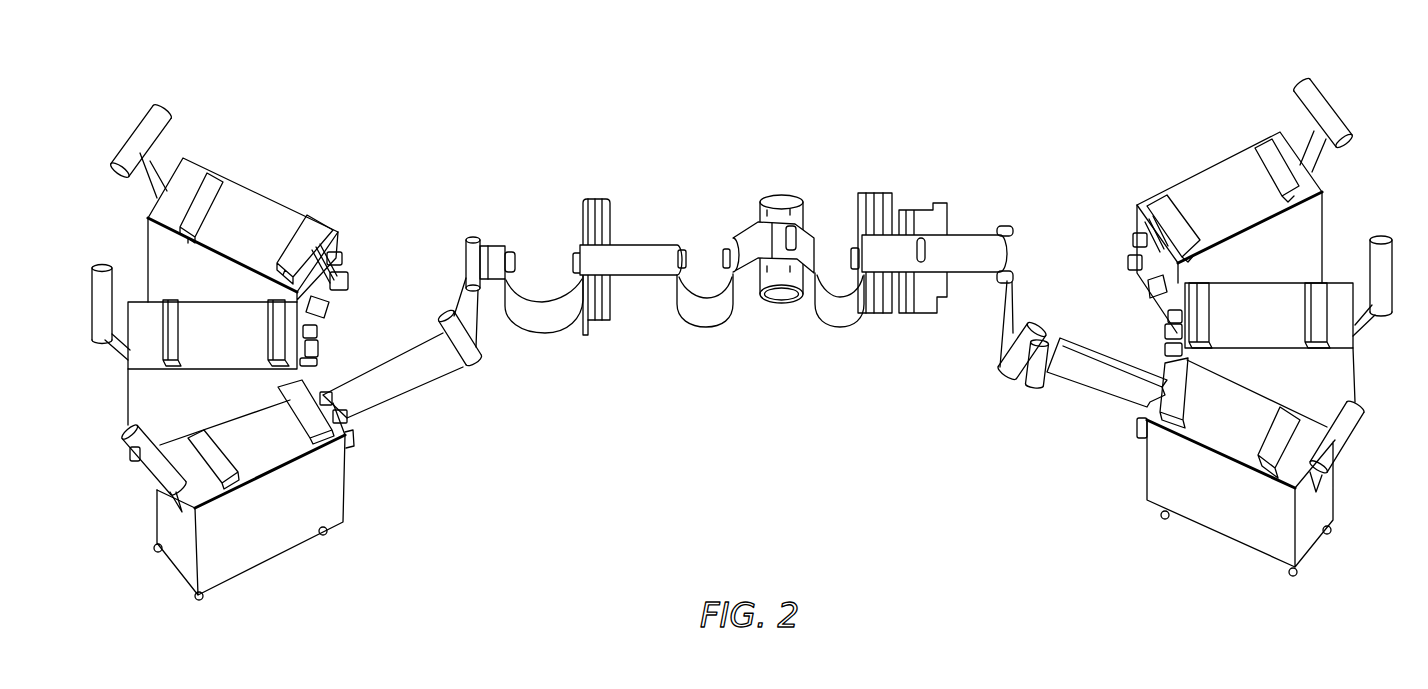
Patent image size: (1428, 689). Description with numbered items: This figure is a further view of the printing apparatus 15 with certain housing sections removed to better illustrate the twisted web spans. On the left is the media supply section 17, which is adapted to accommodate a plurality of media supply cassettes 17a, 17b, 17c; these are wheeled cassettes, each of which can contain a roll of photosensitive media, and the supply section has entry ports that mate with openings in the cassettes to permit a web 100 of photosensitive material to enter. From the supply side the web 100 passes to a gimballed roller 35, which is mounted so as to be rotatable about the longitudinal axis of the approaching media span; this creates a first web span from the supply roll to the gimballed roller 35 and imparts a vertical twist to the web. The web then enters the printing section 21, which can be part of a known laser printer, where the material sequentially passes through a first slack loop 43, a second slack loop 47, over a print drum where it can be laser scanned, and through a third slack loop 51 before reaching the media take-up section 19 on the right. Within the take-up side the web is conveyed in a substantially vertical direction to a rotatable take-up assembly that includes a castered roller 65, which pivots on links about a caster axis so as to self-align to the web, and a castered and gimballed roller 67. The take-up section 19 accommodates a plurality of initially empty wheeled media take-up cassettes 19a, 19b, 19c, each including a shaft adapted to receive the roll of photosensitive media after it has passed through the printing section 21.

The printing apparatus 15 is at (773, 130).
The media supply section 17 is at (410, 262).
The media supply cassette 17a is at (277, 537).
The media supply cassette 17b is at (142, 302).
The media supply cassette 17c is at (272, 202).
The web 100 is at (386, 420).
The gimballed roller 35 is at (475, 362).
The first slack loop 43 is at (543, 330).
The second slack loop 47 is at (708, 323).
The third slack loop 51 is at (843, 327).
The printing section 21 is at (773, 406).
The media take-up section 19 is at (1067, 256).
The media take-up cassette 19a is at (1213, 517).
The media take-up cassette 19b is at (1350, 378).
The media take-up cassette 19c is at (1203, 180).
The castered roller 65 is at (1007, 363).
The castered and gimballed roller 67 is at (1033, 388).